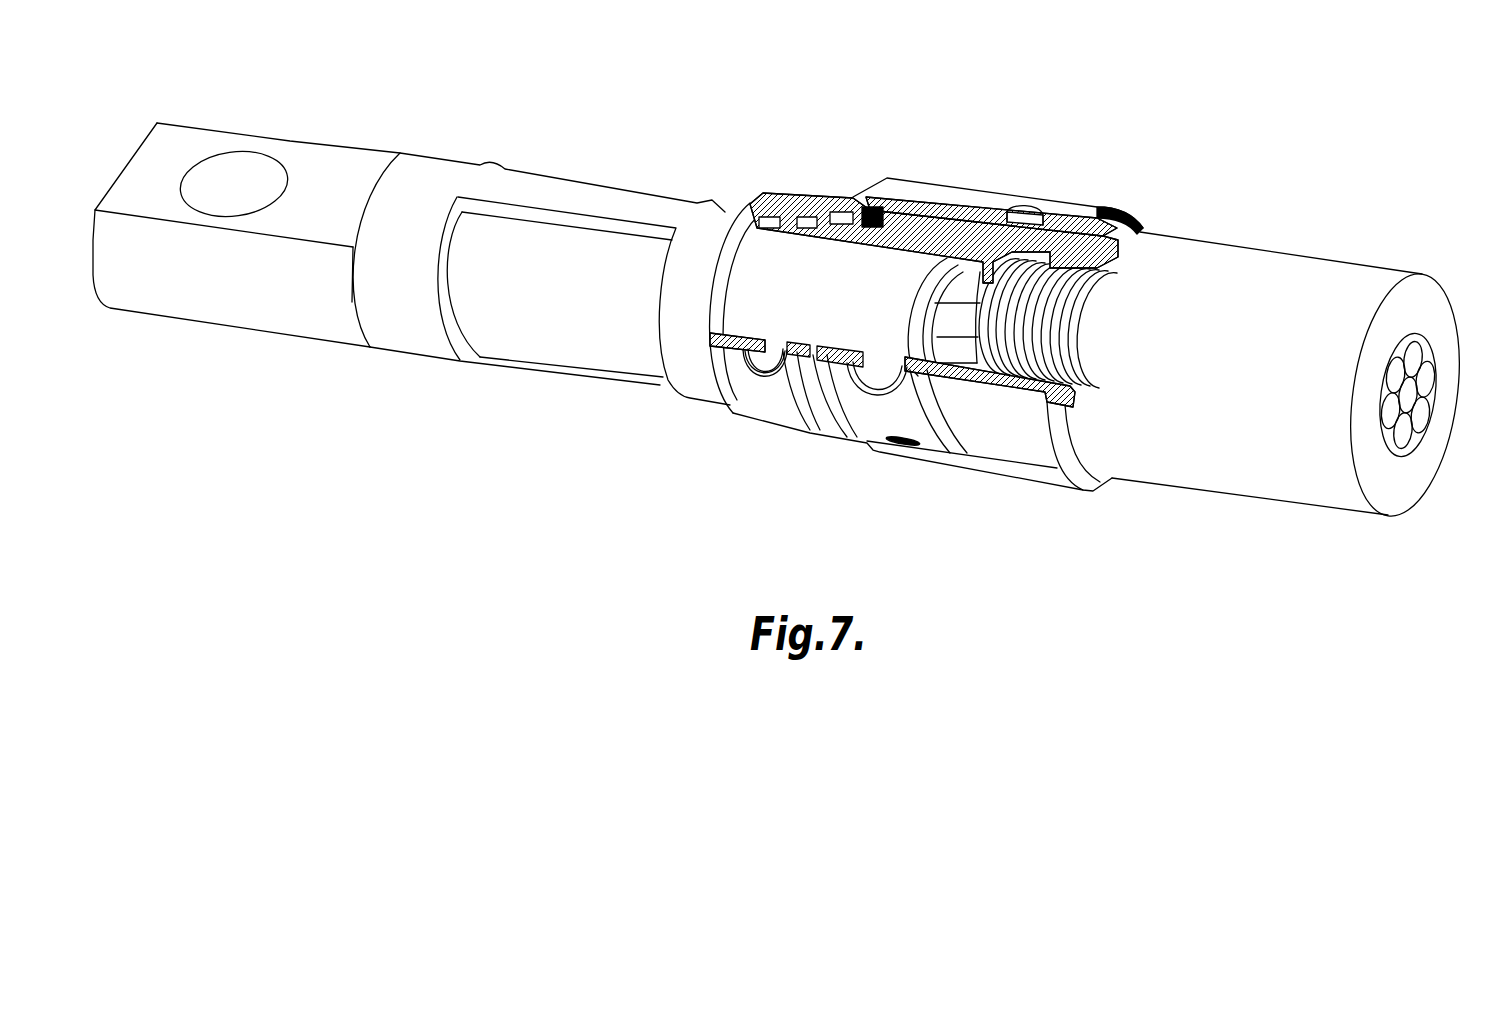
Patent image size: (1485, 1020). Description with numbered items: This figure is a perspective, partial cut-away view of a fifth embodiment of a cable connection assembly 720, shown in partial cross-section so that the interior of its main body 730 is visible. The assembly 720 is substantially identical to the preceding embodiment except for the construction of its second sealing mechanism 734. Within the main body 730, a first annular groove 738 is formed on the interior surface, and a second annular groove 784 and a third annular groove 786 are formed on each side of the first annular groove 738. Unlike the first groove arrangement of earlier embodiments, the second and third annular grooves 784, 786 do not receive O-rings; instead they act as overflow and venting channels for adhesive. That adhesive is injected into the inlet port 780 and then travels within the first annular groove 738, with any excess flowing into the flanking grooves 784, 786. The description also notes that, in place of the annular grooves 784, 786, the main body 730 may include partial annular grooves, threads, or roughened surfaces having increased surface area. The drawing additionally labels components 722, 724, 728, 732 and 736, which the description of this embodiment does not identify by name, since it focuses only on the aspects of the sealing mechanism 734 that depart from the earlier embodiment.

The cable connection assembly 720 is at (975, 142).
The cable 722 is at (1292, 347).
The cylindrical body with block end 724 is at (483, 152).
The cable jacket 728 is at (1300, 265).
The main body 730 is at (836, 205).
The internal threads 732 is at (1102, 288).
The second sealing mechanism 734 is at (748, 243).
The flange 736 is at (1081, 194).
The first annular groove 738 is at (809, 216).
The inlet port 780 is at (752, 378).
The second annular groove 784 is at (847, 220).
The third annular groove 786 is at (768, 216).